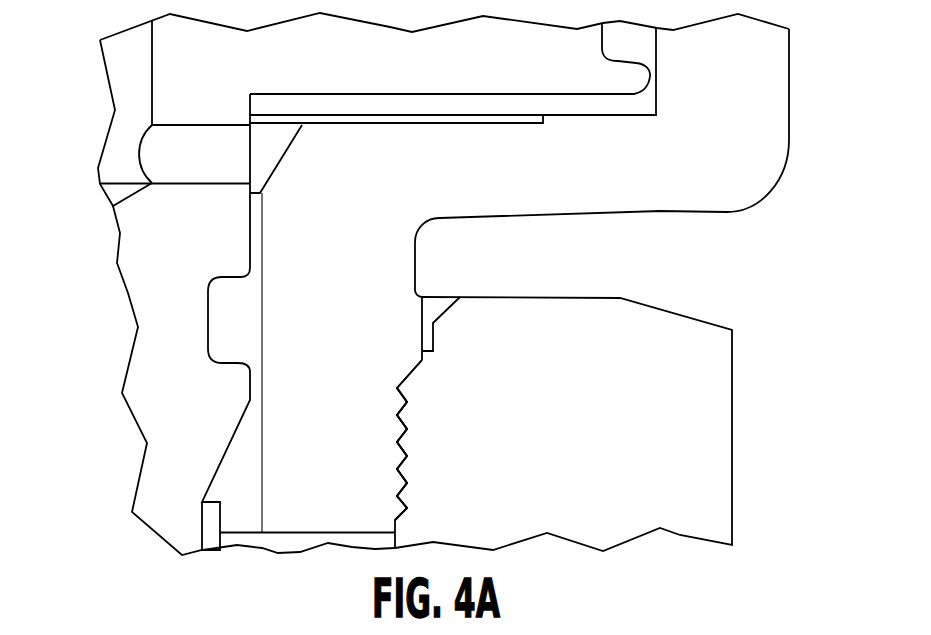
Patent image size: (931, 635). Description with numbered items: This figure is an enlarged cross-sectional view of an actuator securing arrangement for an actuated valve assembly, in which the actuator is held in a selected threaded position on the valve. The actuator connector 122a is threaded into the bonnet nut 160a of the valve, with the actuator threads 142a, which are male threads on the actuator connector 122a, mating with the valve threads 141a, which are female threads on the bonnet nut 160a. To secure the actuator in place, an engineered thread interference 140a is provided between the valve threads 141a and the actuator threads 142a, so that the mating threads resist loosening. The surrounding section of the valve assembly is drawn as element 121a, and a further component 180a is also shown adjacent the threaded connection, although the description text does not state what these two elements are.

The housing 121a is at (748, 178).
The actuator connector 122a is at (332, 342).
The engineered thread interference 140a is at (383, 502).
The valve threads 141a is at (398, 393).
The actuator threads 142a is at (400, 433).
The bonnet nut 160a is at (682, 393).
The seal frame 180a is at (148, 308).